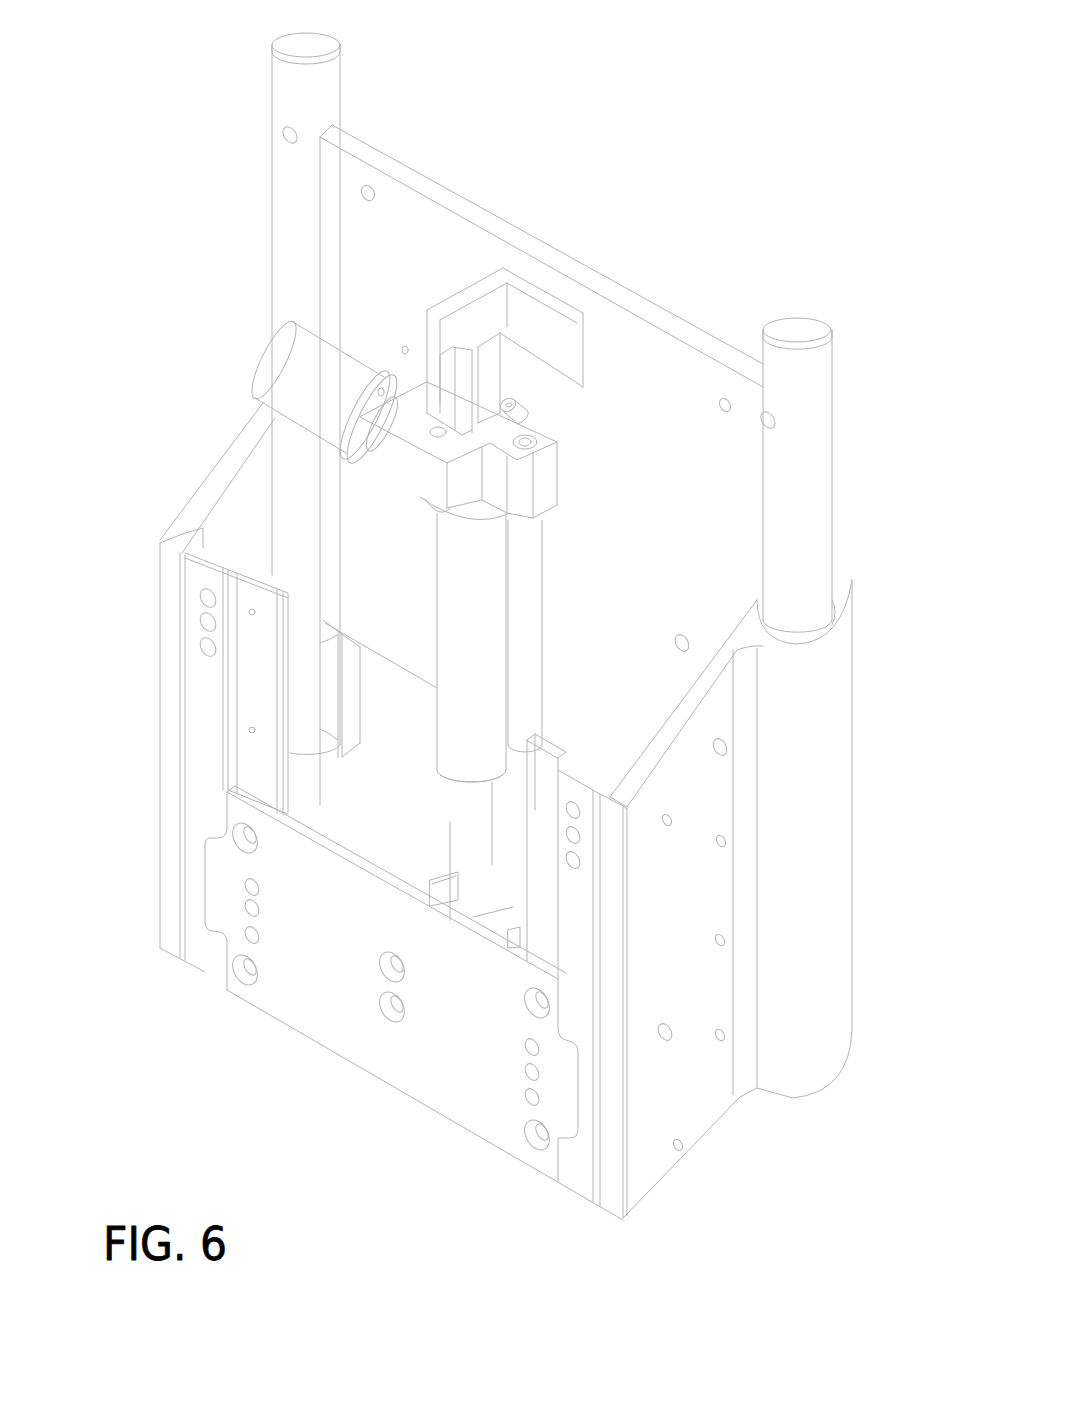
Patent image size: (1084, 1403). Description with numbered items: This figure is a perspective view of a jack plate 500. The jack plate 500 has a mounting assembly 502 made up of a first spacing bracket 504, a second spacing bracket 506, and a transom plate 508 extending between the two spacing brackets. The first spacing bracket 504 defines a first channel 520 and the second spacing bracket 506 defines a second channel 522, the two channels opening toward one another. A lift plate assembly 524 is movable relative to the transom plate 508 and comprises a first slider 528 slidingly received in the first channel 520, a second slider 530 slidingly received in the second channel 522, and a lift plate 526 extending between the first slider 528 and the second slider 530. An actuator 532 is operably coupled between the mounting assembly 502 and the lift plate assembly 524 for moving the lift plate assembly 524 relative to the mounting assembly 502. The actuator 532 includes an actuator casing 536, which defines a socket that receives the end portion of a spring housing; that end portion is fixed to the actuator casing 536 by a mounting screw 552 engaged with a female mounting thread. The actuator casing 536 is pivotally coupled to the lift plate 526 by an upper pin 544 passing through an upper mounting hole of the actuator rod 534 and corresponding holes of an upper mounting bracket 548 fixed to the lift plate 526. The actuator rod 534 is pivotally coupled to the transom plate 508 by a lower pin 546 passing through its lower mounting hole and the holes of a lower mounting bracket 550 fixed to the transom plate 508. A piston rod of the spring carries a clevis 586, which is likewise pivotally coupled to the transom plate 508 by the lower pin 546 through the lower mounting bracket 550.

The jack plate 500 is at (355, 1170).
The mounting assembly 502 is at (772, 922).
The first spacing bracket 504 is at (235, 440).
The second spacing bracket 506 is at (677, 1175).
The transom plate 508 is at (253, 1007).
The first channel 520 is at (327, 743).
The second channel 522 is at (794, 637).
The lift plate assembly 524 is at (541, 432).
The lift plate 526 is at (400, 158).
The first slider 528 is at (268, 170).
The second slider 530 is at (828, 467).
The actuator 532 is at (432, 612).
The actuator rod 534 is at (300, 1120).
The actuator casing 536 is at (402, 457).
The upper pin 544 is at (526, 410).
The lower pin 546 is at (505, 938).
The upper mounting bracket 548 is at (470, 287).
The lower mounting bracket 550 is at (432, 890).
The mounting screw 552 is at (553, 438).
The clevis 586 is at (515, 940).